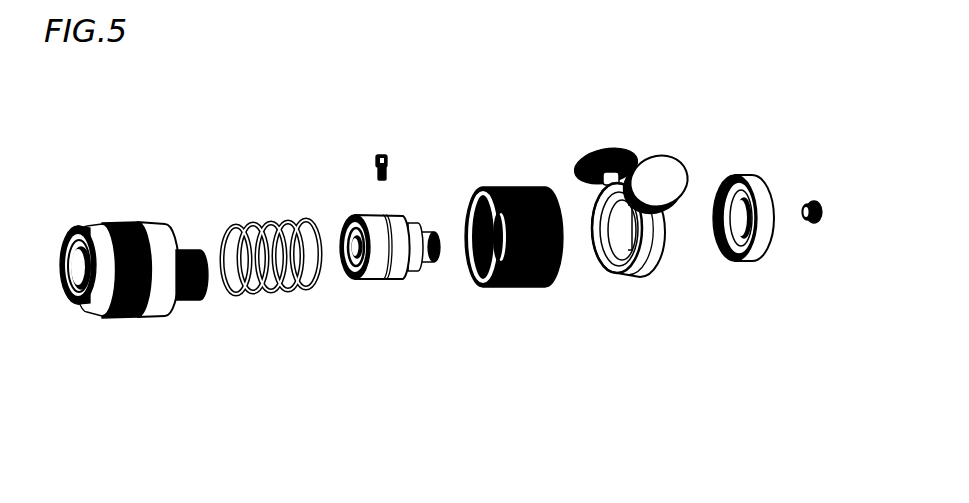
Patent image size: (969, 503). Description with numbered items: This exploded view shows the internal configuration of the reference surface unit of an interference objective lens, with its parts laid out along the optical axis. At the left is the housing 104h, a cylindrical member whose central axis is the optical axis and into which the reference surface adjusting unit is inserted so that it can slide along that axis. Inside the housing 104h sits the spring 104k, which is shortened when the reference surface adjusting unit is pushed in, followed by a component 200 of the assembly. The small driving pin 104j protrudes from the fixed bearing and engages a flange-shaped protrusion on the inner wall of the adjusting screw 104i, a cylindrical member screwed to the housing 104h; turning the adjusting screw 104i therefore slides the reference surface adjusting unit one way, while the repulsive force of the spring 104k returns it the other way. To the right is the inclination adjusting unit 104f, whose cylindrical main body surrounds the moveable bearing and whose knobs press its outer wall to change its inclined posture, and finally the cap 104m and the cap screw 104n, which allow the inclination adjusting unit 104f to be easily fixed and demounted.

The housing 104h is at (160, 296).
The spring 104k is at (277, 294).
The plunger 200 is at (394, 284).
The driving pin 104j is at (380, 155).
The adjusting screw 104i is at (525, 287).
The inclination adjusting unit 104f is at (650, 274).
The cap 104m is at (746, 177).
The cap screw 104n is at (814, 202).